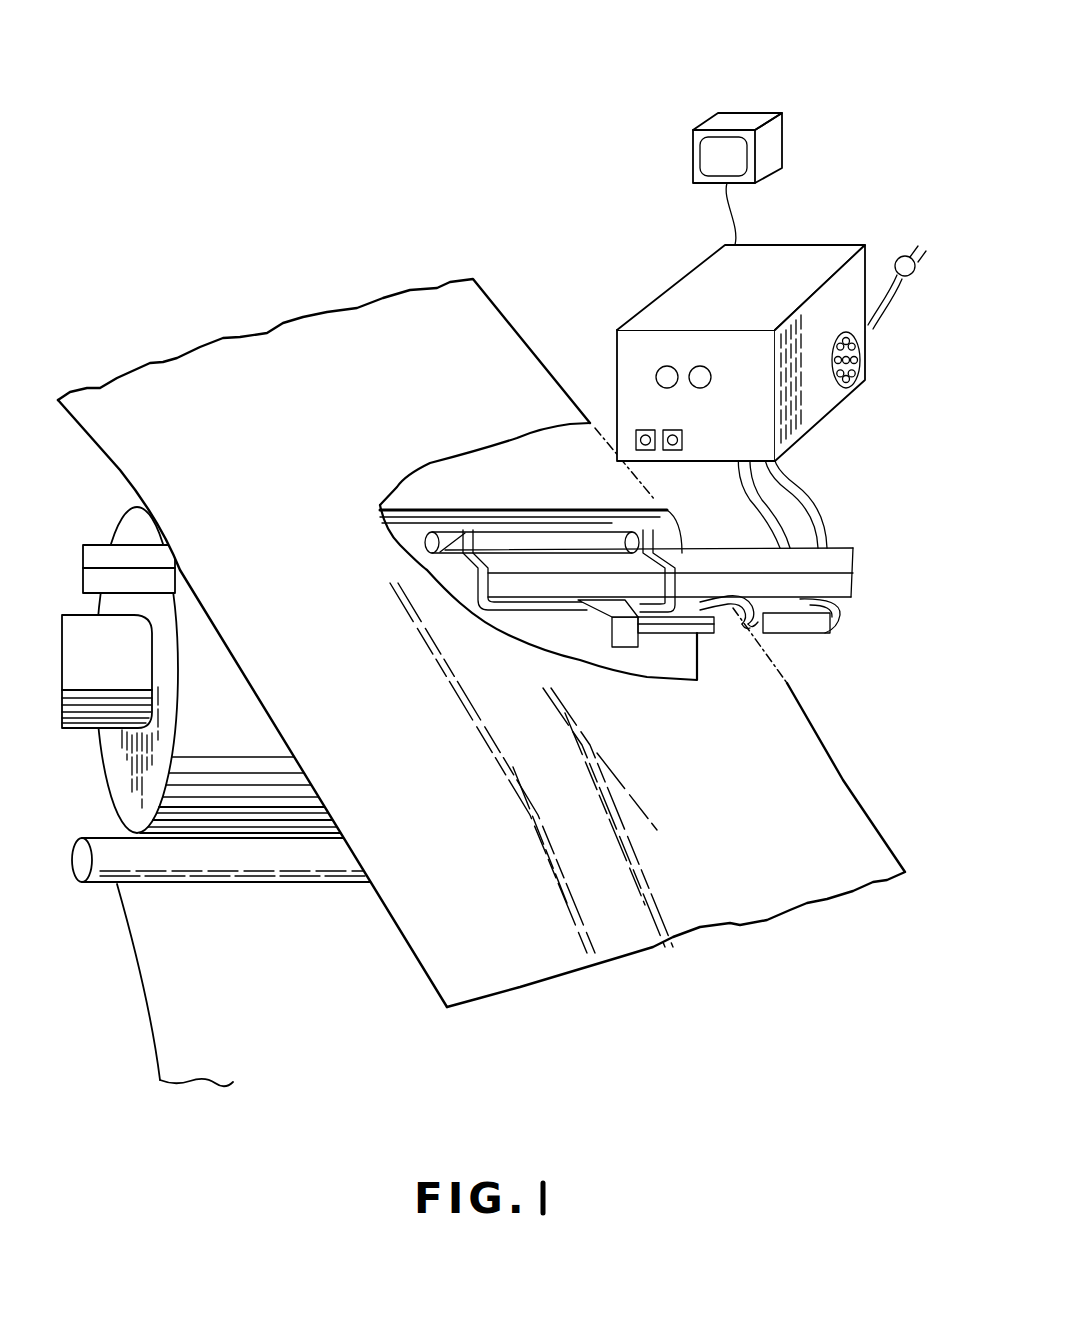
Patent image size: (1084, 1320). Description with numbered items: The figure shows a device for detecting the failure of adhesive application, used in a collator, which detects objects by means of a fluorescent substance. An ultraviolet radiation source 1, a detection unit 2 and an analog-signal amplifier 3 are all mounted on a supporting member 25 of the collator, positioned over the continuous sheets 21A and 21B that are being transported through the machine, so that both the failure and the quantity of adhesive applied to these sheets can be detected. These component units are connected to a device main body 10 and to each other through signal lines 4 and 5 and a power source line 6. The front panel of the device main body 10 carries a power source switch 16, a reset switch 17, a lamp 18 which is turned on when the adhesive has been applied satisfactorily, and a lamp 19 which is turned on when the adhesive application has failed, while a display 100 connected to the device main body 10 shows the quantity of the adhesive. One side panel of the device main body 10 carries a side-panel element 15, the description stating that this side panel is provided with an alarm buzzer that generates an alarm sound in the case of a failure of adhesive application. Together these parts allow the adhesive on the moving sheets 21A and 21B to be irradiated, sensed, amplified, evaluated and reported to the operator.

The ultraviolet radiation source 1 is at (620, 527).
The detection unit 2 is at (633, 637).
The analog-signal amplifier 3 is at (813, 627).
The signal line 4 is at (745, 620).
The signal line 5 is at (748, 503).
The power source line 6 is at (800, 490).
The device main body 10 is at (771, 325).
The connector socket 15 is at (853, 383).
The power source switch 16 is at (645, 429).
The reset switch 17 is at (683, 436).
The lamp 18 is at (668, 365).
The lamp 19 is at (702, 365).
The continuous sheet 21A is at (203, 1052).
The continuous sheet 21B is at (702, 923).
The supporting member 25 is at (837, 563).
The display 100 is at (728, 113).